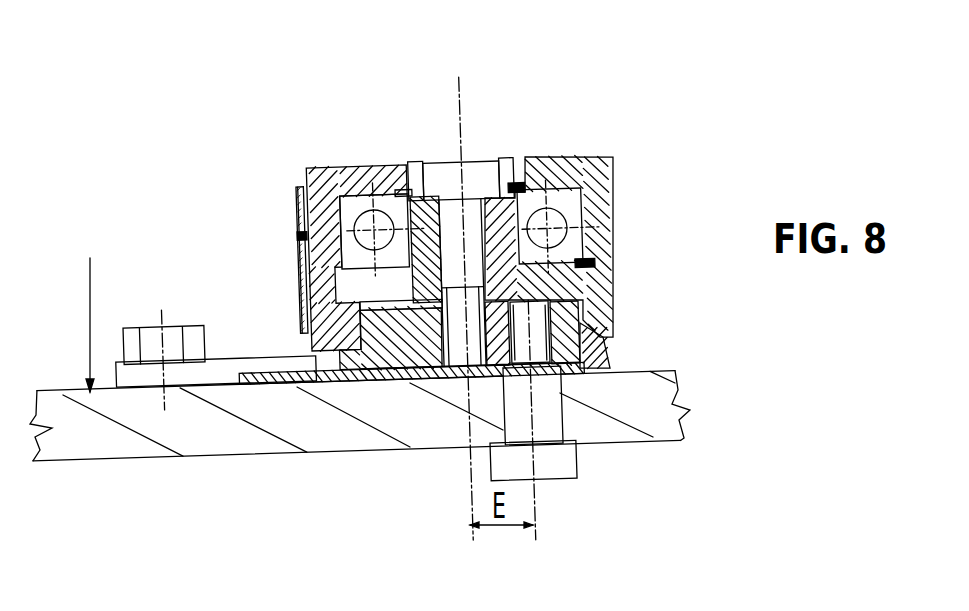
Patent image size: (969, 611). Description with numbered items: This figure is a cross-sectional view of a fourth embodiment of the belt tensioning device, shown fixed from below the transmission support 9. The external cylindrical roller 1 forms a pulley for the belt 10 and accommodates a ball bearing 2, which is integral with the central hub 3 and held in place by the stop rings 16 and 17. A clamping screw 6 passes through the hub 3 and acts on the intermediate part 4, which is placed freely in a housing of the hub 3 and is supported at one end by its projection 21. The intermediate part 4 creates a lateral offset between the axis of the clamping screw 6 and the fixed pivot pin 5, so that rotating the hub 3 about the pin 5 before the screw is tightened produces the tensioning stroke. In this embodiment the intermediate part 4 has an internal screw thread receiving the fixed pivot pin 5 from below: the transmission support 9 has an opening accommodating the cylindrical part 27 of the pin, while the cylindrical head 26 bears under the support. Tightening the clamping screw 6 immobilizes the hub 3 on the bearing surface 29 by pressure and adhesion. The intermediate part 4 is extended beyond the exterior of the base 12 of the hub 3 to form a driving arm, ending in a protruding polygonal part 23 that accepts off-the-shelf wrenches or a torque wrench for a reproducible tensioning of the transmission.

The external cylindrical roller 1 is at (280, 187).
The ball bearing 2 is at (337, 148).
The hub 3 is at (427, 218).
The intermediate part 4 is at (365, 414).
The fixed pivot pin 5 is at (581, 436).
The clamping screw 6 is at (450, 337).
The transmission support 9 is at (360, 451).
The belt 10 is at (228, 223).
The base 12 is at (636, 312).
The stop ring 16 is at (634, 208).
The stop ring 17 is at (600, 100).
The projection 21 is at (295, 245).
The protruding polygonal part 23 is at (127, 266).
The cylindrical head 26 is at (482, 511).
The cylindrical part 27 is at (589, 439).
The bearing surface 29 is at (92, 255).